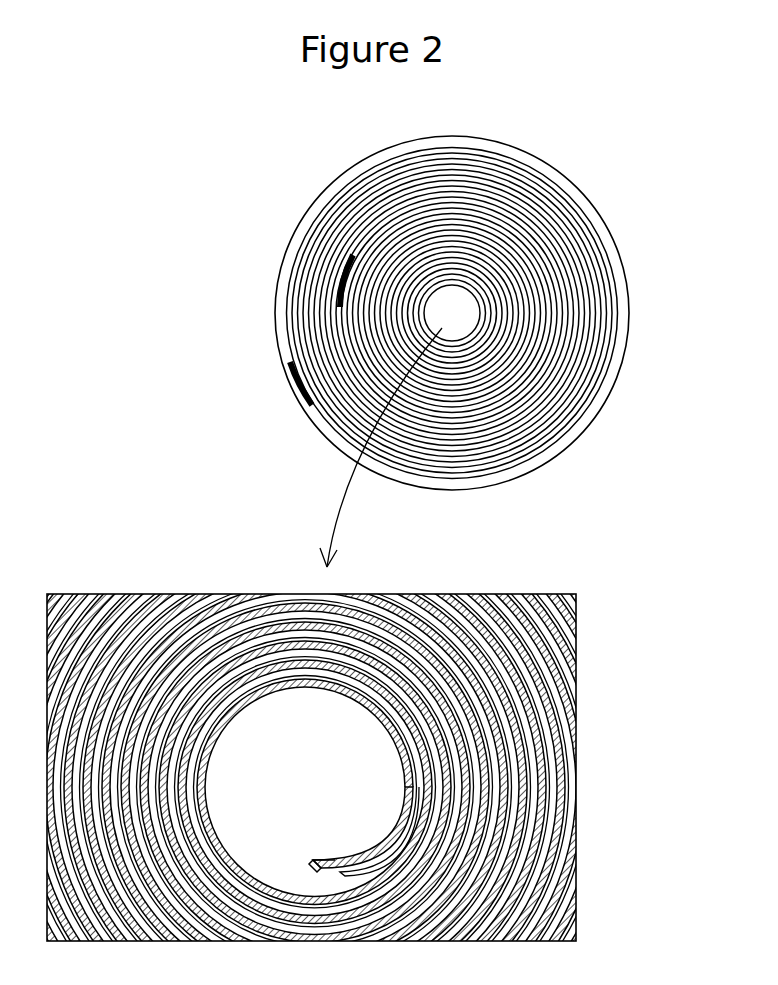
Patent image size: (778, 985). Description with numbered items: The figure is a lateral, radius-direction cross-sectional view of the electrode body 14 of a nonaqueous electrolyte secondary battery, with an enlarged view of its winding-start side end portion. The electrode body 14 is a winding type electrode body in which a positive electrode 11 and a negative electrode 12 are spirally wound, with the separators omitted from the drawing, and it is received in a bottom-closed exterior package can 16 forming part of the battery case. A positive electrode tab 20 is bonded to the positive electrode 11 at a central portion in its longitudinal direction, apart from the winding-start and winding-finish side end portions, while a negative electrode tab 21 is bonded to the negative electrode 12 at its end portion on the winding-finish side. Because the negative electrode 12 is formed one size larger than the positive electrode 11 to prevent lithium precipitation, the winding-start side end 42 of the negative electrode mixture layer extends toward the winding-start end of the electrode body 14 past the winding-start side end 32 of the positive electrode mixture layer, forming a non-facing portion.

The exterior package can 16 is at (573, 183).
The electrode body 14 is at (622, 283).
The positive electrode tab 20 is at (344, 268).
The negative electrode tab 21 is at (291, 376).
The positive electrode 11 is at (410, 775).
The negative electrode 12 is at (406, 746).
The winding-start side end of the negative electrode mixture layer 42 is at (312, 858).
The winding-start side end of the positive electrode mixture layer 32 is at (328, 858).